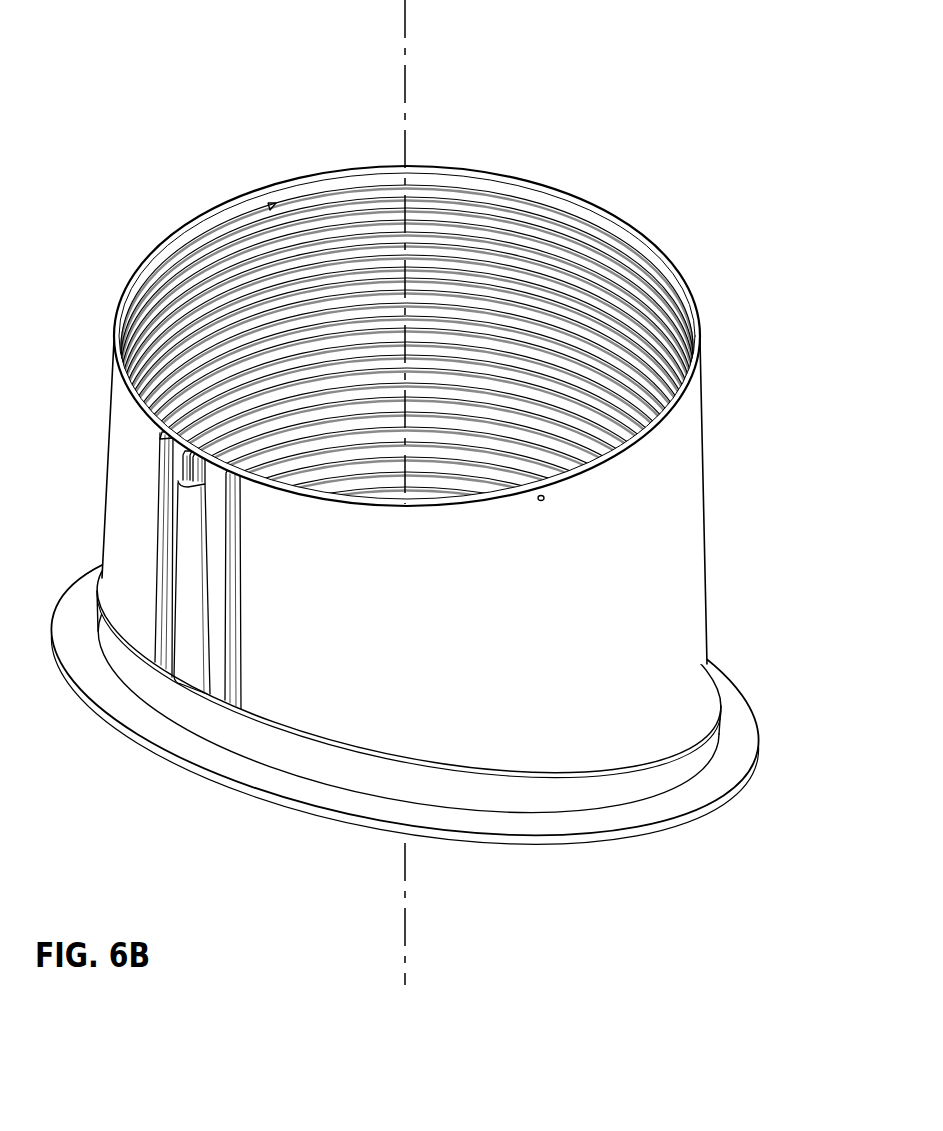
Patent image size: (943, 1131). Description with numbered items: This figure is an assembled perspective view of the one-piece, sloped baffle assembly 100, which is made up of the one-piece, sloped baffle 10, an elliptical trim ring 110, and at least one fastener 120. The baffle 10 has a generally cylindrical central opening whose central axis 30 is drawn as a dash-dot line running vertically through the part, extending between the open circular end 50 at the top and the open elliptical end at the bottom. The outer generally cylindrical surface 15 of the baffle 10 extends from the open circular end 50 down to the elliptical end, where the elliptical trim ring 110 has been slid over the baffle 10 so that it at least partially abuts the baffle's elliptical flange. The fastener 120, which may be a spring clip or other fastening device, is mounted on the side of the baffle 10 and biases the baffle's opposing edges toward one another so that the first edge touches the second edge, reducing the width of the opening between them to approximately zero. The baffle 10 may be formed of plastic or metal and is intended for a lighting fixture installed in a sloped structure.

The one-piece, sloped baffle assembly 100 is at (422, 492).
The one-piece, sloped baffle 10 is at (419, 493).
The outer generally cylindrical surface 15 is at (491, 709).
The central axis 30 is at (406, 88).
The open circular end 50 is at (520, 178).
The elliptical trim ring 110 is at (127, 735).
The fastener 120 is at (193, 533).